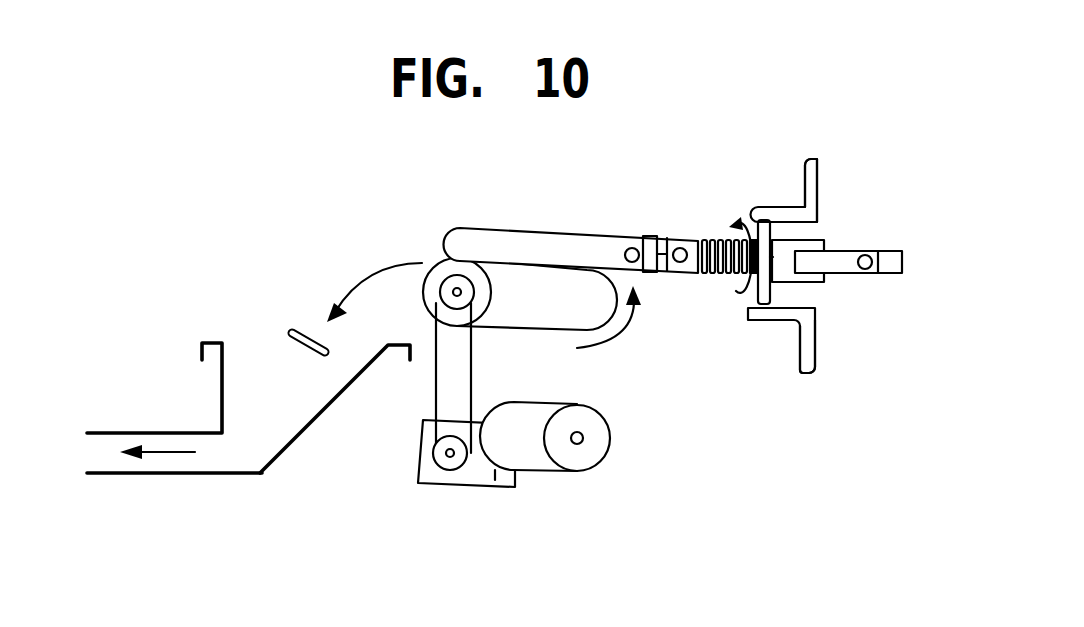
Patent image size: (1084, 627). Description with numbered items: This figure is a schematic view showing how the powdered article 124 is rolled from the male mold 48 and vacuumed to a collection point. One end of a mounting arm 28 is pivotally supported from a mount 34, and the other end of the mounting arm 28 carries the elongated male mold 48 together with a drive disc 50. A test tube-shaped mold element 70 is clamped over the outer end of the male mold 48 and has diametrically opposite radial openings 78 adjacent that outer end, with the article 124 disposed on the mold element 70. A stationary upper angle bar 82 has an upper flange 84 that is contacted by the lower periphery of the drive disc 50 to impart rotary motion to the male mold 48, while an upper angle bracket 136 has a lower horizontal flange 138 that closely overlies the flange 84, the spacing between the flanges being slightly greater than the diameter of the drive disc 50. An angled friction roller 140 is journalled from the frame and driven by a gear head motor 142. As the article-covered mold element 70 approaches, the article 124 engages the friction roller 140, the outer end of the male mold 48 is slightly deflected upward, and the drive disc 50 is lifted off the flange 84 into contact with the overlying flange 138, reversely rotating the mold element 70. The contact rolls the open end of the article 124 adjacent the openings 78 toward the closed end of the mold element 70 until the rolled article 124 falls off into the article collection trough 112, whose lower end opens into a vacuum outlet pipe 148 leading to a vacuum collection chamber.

The mounting arm 28 is at (838, 257).
The mount 34 is at (892, 250).
The male mold 48 is at (698, 239).
The drive disc 50 is at (777, 221).
The mold element 70 is at (503, 227).
The radial openings 78 is at (633, 262).
The upper angle bar 82 is at (816, 347).
The upper flange 84 is at (767, 321).
The article collection trough 112 is at (293, 440).
The article 124 is at (300, 330).
The upper angle bracket 136 is at (821, 172).
The lower horizontal flange 138 is at (762, 207).
The friction roller 140 is at (511, 316).
The gear head motor 142 is at (498, 482).
The vacuum outlet pipe 148 is at (152, 475).